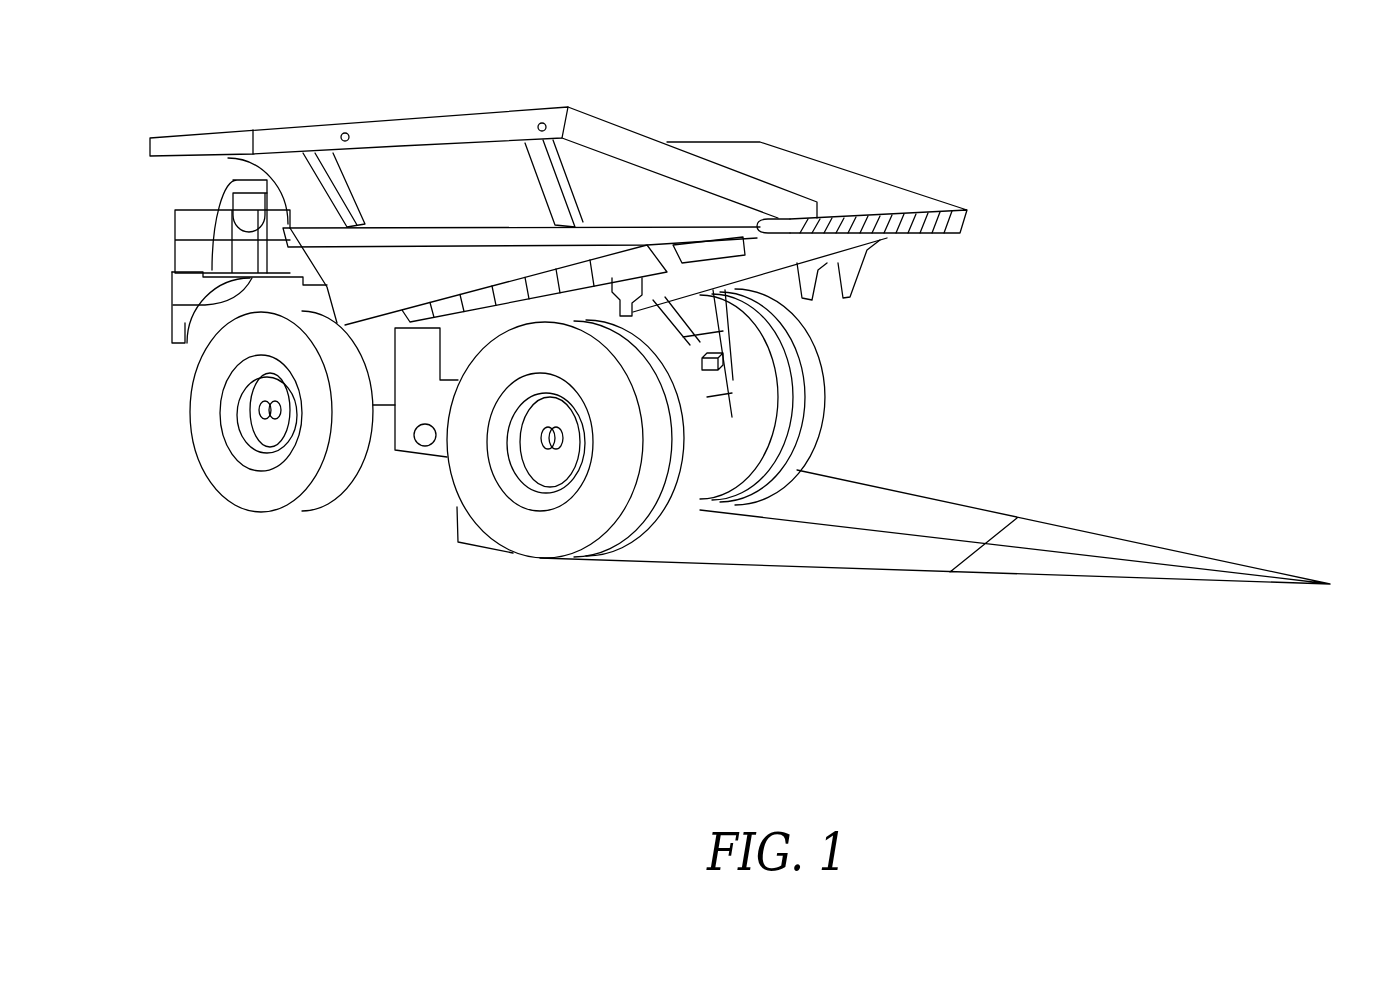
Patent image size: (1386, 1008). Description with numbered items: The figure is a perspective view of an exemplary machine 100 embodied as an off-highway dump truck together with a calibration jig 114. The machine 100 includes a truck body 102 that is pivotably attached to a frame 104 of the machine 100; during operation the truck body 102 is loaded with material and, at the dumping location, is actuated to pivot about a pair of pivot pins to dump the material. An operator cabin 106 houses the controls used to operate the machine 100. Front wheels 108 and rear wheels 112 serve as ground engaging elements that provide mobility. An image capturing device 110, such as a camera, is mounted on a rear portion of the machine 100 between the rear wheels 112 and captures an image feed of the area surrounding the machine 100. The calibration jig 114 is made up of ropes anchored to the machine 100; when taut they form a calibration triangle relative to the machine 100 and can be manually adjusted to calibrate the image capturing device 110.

The machine 100 is at (1012, 108).
The truck body 102 is at (420, 178).
The frame 104 is at (173, 305).
The operator cabin 106 is at (247, 197).
The front wheels 108 is at (262, 507).
The image capturing device 110 is at (722, 357).
The rear wheels 112 is at (530, 543).
The calibration jig 114 is at (1052, 527).